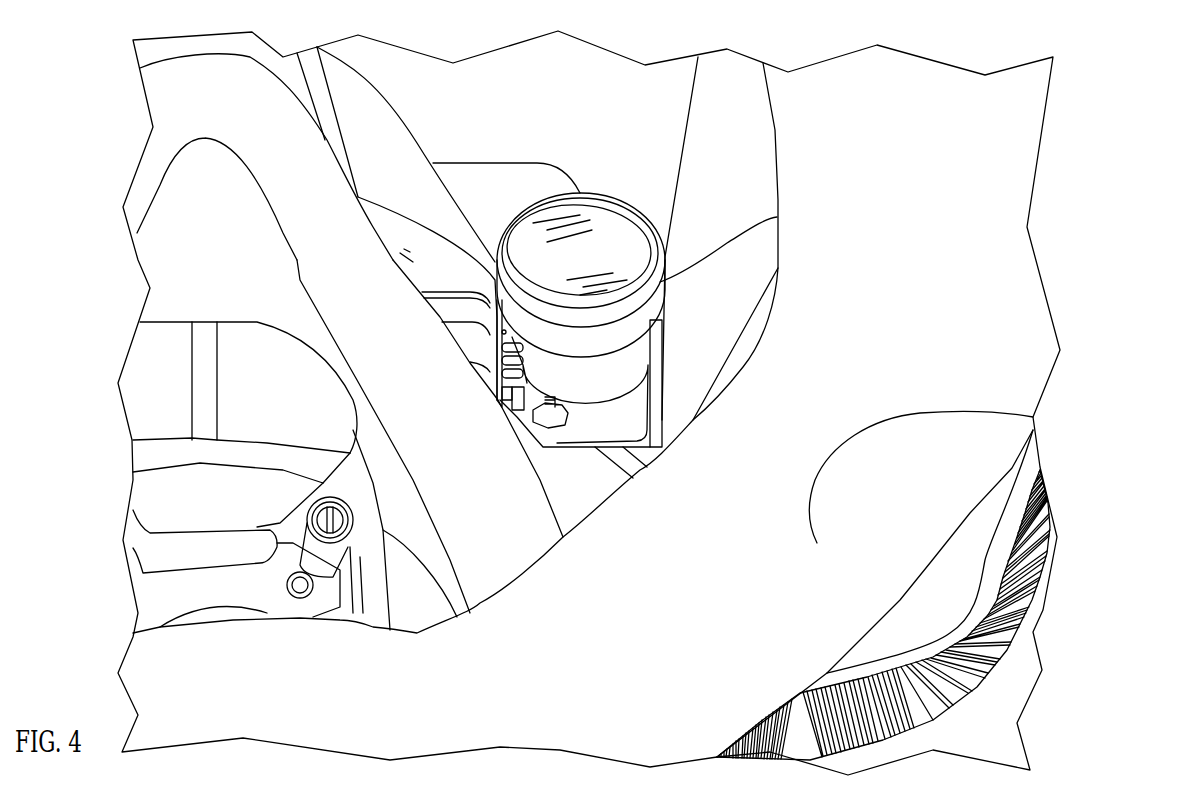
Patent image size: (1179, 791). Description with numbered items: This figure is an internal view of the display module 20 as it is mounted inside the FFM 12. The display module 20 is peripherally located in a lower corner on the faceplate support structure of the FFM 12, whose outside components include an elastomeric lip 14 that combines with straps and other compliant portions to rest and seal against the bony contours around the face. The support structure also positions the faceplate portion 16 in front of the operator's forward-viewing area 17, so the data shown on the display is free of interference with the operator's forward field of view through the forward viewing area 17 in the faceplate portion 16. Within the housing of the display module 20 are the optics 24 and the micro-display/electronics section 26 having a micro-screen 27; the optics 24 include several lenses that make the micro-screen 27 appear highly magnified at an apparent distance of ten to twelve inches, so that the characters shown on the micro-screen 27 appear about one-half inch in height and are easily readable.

The elastomeric lip 14 is at (1033, 417).
The faceplate portion 16 is at (553, 93).
The forward-viewing area 17 is at (217, 199).
The display module 20 is at (777, 217).
The optics 24 is at (595, 205).
The micro-display/electronics section 26 is at (580, 253).
The micro-screen 27 is at (581, 318).
The FFM (full face mask) FFM12 is at (1003, 293).